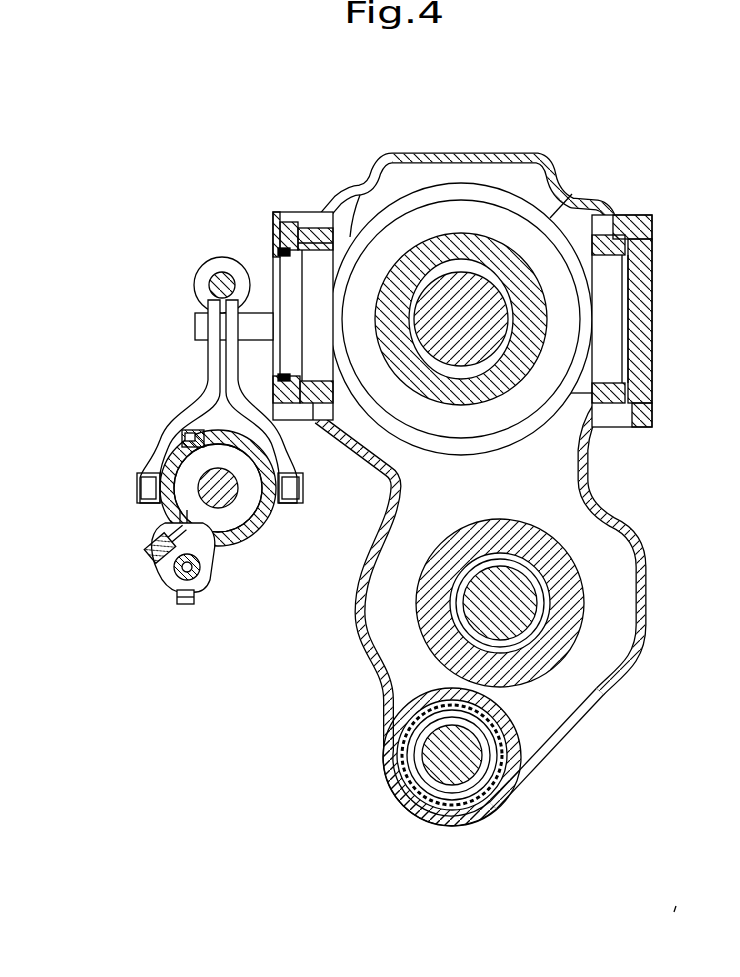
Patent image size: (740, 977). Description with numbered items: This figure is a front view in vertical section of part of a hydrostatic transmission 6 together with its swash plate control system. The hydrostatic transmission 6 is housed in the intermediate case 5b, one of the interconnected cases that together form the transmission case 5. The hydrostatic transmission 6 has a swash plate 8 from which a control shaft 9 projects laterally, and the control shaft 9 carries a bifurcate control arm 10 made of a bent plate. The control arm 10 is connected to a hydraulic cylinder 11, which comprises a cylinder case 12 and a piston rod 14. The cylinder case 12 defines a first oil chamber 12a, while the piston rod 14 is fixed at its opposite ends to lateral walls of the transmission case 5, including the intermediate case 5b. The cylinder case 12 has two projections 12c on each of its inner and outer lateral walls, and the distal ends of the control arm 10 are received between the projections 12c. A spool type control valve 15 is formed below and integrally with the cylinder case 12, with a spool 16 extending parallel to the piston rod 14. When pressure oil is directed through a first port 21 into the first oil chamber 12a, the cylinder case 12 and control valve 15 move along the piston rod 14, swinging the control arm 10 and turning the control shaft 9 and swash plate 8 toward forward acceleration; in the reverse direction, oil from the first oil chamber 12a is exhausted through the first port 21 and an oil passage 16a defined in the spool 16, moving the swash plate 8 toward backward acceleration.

The transmission case 5 is at (479, 607).
The intermediate case 5b is at (374, 165).
The hydrostatic transmission 6 is at (525, 177).
The swash plate 8 is at (572, 194).
The control shaft 9 is at (196, 322).
The bifurcate control arm 10 is at (210, 392).
The hydraulic cylinder 11 is at (145, 519).
The cylinder case 12 is at (243, 541).
The first oil chamber 12a is at (187, 477).
The projections 12c is at (304, 491).
The piston rod 14 is at (237, 497).
The spool type control valve 15 is at (162, 595).
The spool 16 is at (195, 600).
The oil passage 16a is at (200, 568).
The first port 21 is at (150, 540).